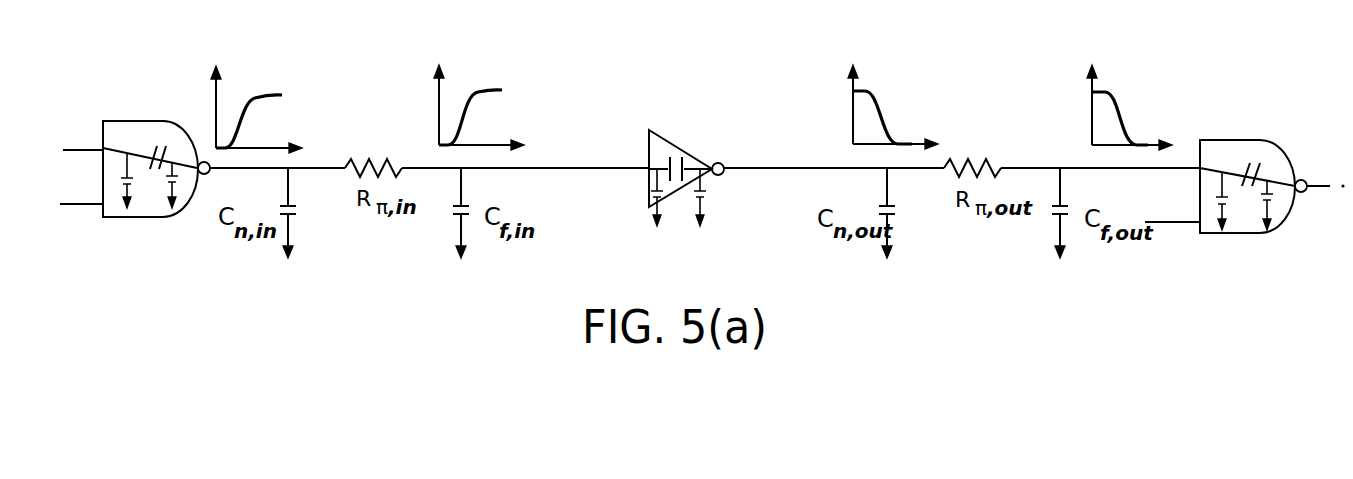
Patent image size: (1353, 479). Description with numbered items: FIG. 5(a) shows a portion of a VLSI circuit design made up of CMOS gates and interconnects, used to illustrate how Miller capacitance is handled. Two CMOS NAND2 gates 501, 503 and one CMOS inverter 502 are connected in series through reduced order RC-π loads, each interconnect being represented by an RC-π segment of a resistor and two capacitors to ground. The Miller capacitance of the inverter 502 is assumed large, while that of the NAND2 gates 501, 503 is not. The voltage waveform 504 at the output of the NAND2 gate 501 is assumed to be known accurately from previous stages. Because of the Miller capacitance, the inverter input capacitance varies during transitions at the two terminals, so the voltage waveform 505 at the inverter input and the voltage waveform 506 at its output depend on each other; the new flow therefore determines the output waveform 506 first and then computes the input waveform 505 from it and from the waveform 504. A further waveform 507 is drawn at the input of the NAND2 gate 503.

The CMOS NAND2 gate 501 is at (150, 121).
The CMOS inverter 502 is at (675, 142).
The CMOS NAND2 gate 503 is at (1246, 140).
The voltage waveform at output of NAND2 gate 504 is at (261, 95).
The voltage waveform at input of inverter 505 is at (482, 92).
The voltage waveform at output of inverter 506 is at (882, 110).
The falling waveform at gate 503 input 507 is at (1120, 110).